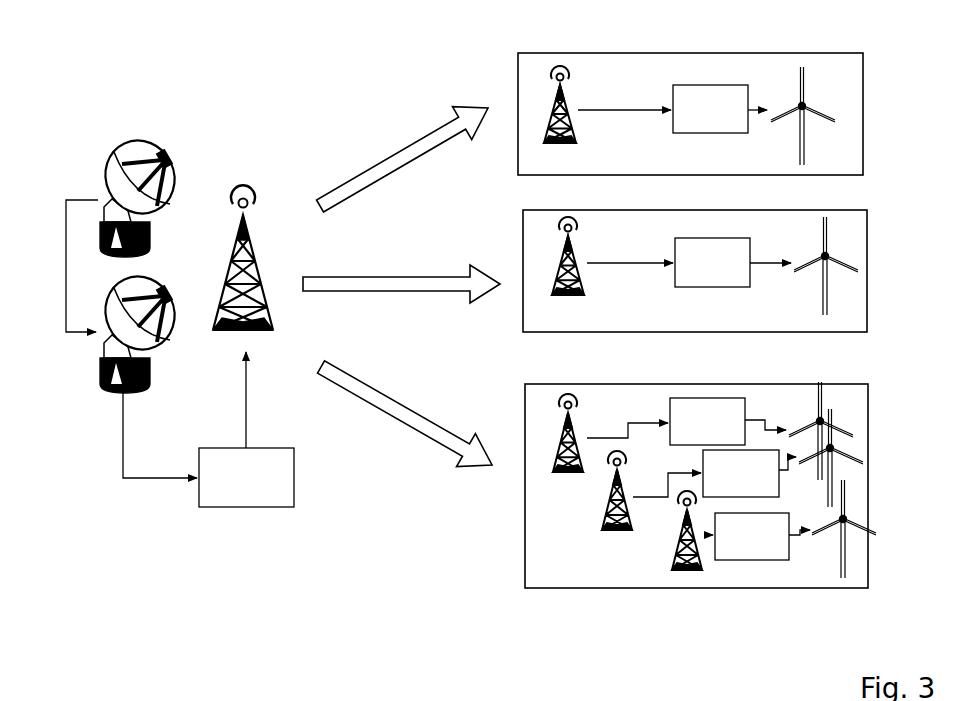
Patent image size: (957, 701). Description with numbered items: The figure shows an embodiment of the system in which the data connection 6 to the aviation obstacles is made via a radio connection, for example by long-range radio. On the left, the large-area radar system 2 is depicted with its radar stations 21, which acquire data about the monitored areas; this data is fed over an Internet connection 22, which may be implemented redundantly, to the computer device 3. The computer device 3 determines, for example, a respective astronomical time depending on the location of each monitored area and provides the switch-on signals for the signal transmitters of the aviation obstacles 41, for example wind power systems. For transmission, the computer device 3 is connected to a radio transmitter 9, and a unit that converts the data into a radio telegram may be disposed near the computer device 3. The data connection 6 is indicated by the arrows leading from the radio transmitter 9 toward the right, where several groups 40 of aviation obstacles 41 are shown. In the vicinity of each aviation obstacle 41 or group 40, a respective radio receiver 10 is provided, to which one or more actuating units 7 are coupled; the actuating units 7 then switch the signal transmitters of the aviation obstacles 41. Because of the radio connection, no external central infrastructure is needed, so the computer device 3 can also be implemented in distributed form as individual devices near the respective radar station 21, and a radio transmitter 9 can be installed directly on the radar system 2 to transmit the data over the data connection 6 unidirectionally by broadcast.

The large-area radar system 2 is at (132, 115).
The radar station 21 is at (154, 516).
The Internet connection 22 is at (140, 478).
The computer device 3 is at (294, 492).
The radio transmitter 9 is at (252, 247).
The data connection 6 is at (408, 128).
The group of aviation obstacles 40 is at (863, 106).
The radio receiver 10 is at (575, 128).
The actuating unit 7 is at (729, 322).
The aviation obstacle 41 is at (811, 140).